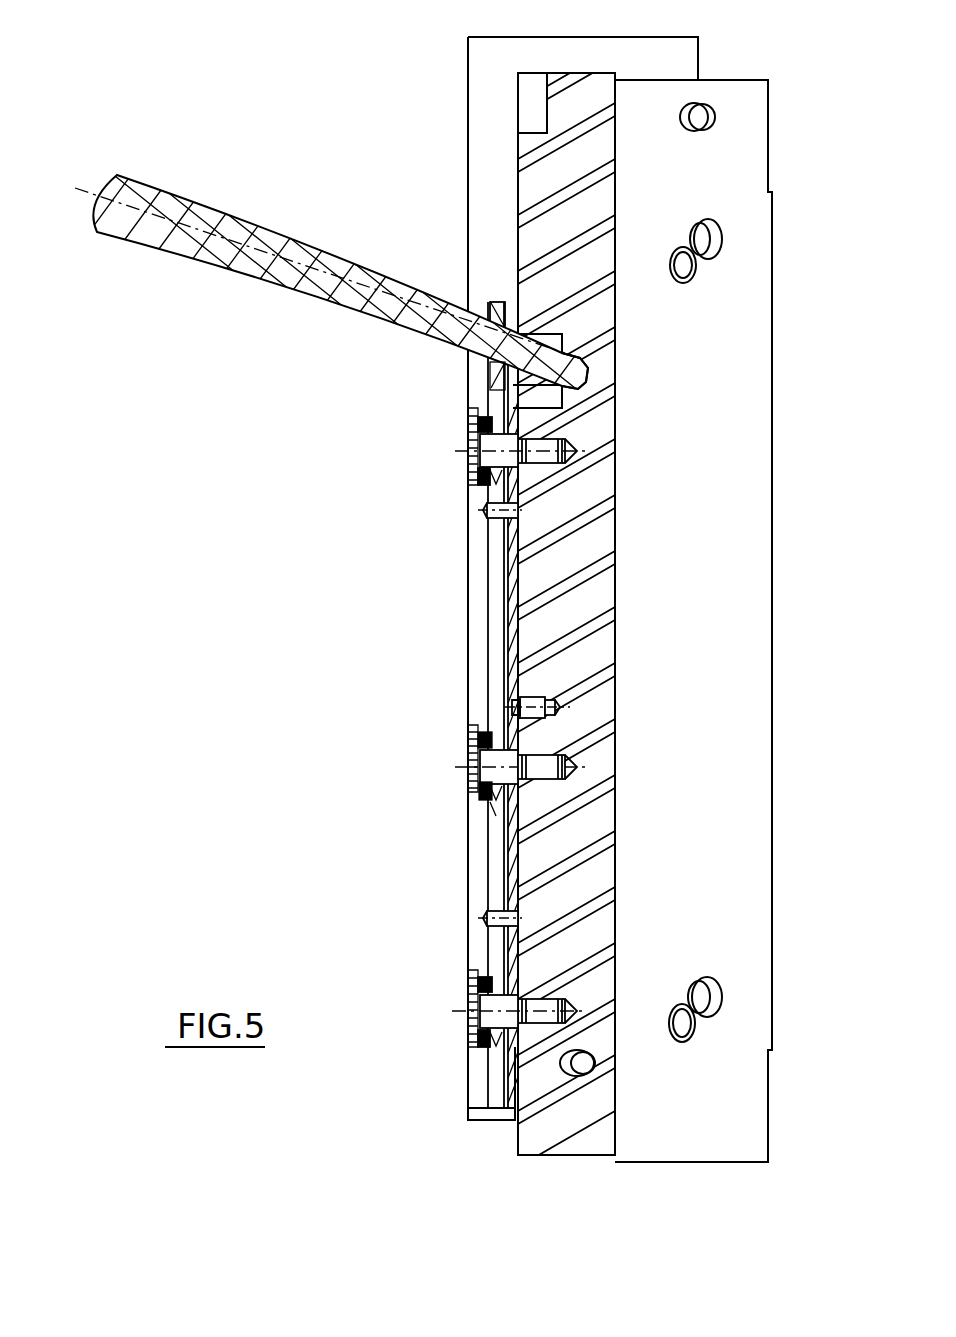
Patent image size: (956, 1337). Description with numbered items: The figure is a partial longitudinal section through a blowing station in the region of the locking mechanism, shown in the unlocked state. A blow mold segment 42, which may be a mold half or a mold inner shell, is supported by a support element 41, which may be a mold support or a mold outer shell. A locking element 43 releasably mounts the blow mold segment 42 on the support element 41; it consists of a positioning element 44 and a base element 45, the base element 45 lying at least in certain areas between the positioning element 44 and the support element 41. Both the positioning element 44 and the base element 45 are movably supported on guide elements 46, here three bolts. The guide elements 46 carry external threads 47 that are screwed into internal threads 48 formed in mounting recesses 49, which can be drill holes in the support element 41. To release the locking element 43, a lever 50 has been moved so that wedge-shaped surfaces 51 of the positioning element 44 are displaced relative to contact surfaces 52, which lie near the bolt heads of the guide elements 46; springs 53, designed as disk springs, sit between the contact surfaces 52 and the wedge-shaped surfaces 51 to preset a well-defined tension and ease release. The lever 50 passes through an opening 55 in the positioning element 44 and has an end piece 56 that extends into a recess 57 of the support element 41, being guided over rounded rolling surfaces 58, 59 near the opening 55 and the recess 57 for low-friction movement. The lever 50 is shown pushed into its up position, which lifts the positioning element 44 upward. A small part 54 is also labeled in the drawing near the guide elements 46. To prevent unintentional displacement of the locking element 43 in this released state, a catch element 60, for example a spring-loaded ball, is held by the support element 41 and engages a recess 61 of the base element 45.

The support element 41 is at (525, 190).
The blow mold segment 42 is at (477, 66).
The locking element 43 is at (470, 570).
The positioning element 44 is at (490, 630).
The base element 45 is at (510, 558).
The guide elements 46 is at (478, 448).
The external threads 47 is at (580, 767).
The internal threads 48 is at (550, 755).
The mounting recesses 49 is at (550, 780).
The lever 50 is at (210, 213).
The wedge-shaped surfaces 51 is at (477, 750).
The contact surfaces 52 is at (473, 797).
The springs 53 is at (485, 802).
The sleeve 54 is at (467, 748).
The opening 55 is at (478, 372).
The end piece 56 is at (580, 362).
The recess 57 is at (586, 374).
The rounded rolling surface 58 is at (490, 306).
The rounded rolling surface 59 is at (577, 352).
The catch element 60 is at (525, 700).
The recess 61 is at (478, 725).